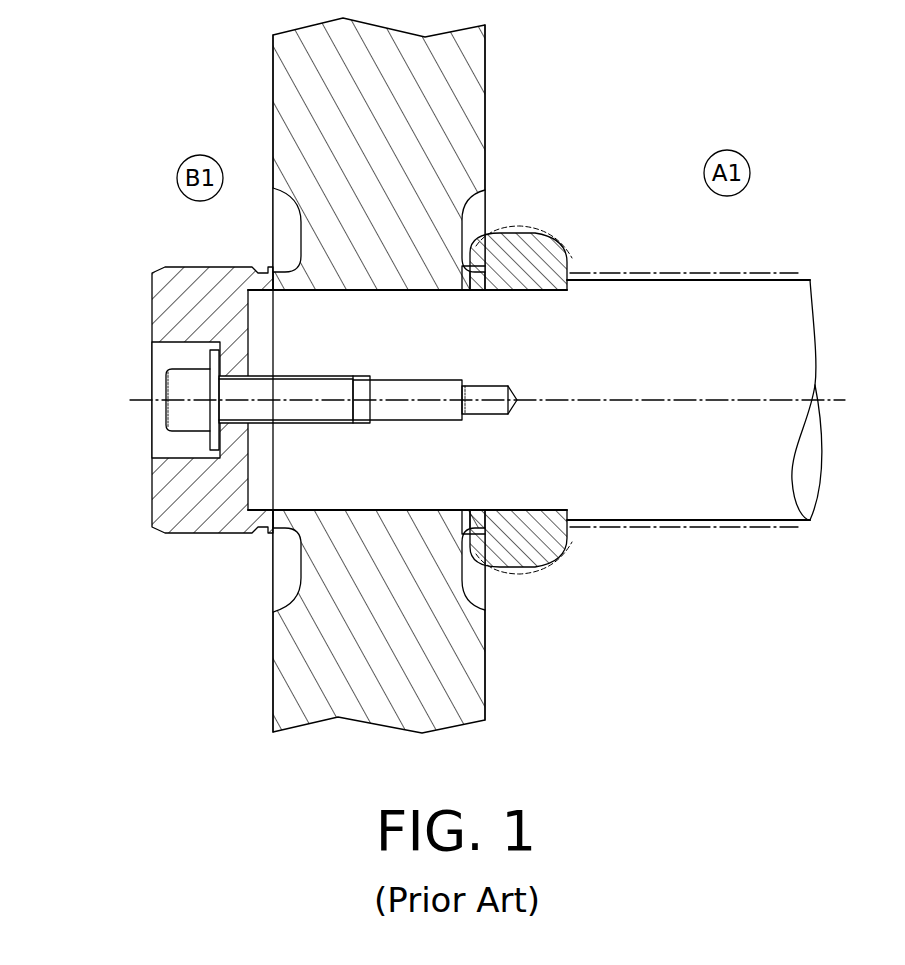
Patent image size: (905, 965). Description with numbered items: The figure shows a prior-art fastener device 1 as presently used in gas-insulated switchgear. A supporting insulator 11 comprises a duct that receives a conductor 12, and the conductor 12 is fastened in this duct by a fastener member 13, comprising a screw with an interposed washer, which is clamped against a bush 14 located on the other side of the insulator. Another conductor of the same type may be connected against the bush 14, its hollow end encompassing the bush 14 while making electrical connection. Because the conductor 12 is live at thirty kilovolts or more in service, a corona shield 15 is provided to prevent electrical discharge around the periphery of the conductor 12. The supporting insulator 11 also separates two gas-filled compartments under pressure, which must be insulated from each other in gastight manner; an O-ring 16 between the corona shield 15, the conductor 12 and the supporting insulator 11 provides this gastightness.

The fastener device 1 is at (103, 218).
The supporting insulator 11 is at (450, 118).
The conductor 12 is at (713, 497).
The fastener member 13 is at (180, 391).
The bush 14 is at (208, 510).
The corona shield 15 is at (530, 250).
The O-ring 16 is at (500, 555).